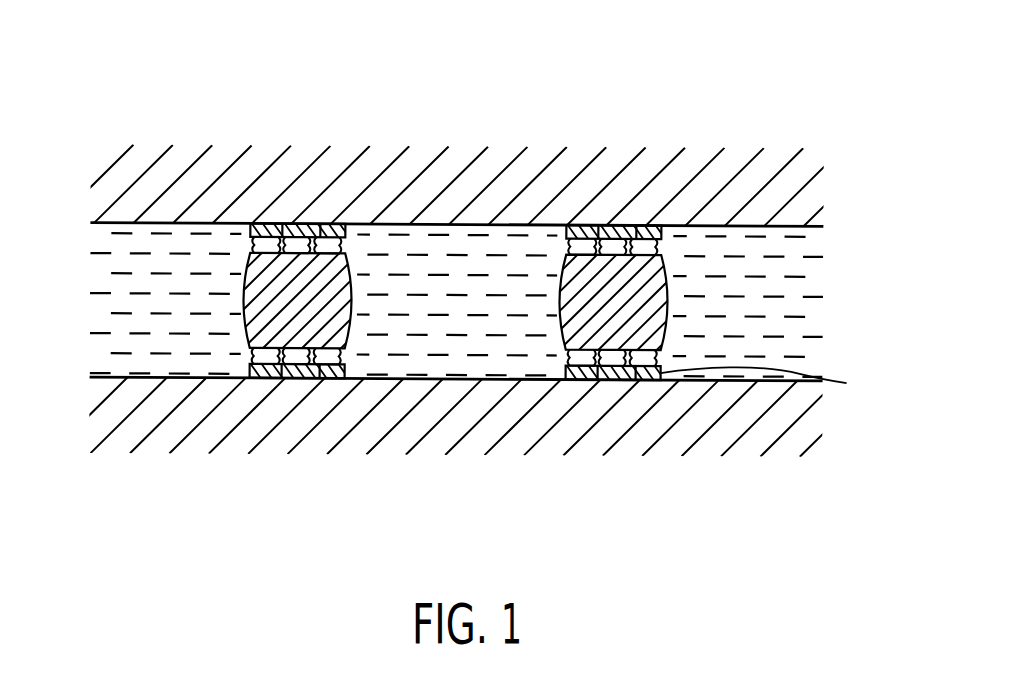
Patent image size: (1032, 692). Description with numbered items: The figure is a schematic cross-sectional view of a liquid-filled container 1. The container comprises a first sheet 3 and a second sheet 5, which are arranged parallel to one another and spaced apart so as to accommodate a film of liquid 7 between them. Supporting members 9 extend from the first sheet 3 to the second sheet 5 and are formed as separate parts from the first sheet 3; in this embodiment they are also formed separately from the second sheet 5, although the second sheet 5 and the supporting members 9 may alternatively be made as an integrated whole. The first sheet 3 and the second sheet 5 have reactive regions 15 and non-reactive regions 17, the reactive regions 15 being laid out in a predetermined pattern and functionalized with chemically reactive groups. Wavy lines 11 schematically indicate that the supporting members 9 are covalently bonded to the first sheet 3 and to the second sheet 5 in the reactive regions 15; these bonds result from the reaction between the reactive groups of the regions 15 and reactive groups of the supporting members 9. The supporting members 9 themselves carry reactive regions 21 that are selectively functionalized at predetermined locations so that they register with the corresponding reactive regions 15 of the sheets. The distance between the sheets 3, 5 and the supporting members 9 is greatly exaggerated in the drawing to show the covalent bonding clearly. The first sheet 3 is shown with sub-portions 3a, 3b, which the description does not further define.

The liquid-filled container 1 is at (82, 154).
The first sheet 3 is at (463, 415).
The substrate base 3a is at (818, 436).
The substrate surface layer 3b is at (770, 385).
The second sheet 5 is at (833, 147).
The film of liquid 7 is at (486, 476).
The supporting members 9 is at (573, 293).
The wavy lines 11 is at (535, 477).
The reactive regions 15 is at (653, 476).
The non-reactive regions 17 is at (742, 476).
The reactive regions of the supporting members 21 is at (613, 476).